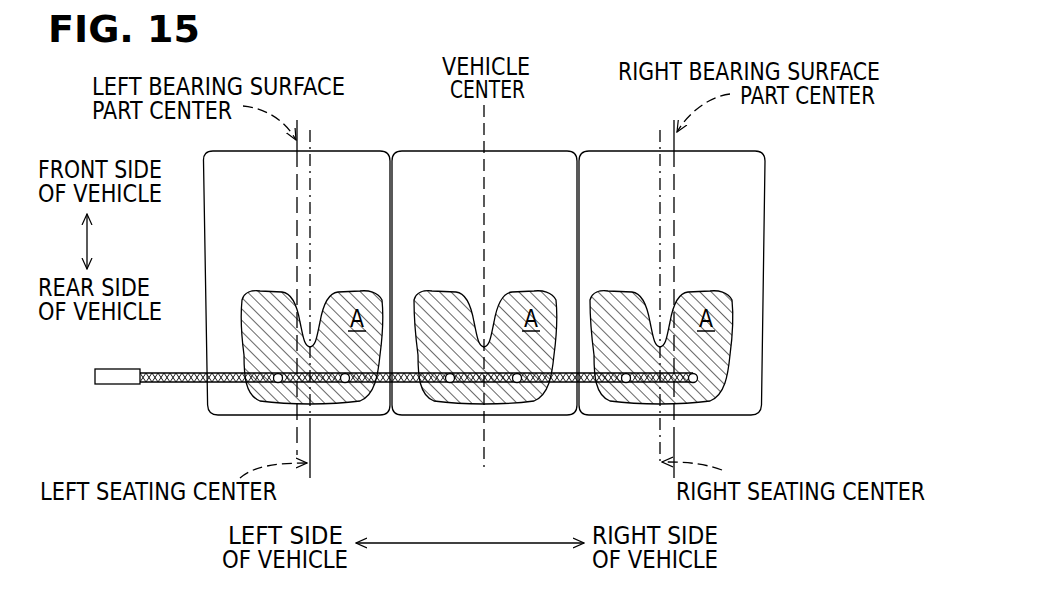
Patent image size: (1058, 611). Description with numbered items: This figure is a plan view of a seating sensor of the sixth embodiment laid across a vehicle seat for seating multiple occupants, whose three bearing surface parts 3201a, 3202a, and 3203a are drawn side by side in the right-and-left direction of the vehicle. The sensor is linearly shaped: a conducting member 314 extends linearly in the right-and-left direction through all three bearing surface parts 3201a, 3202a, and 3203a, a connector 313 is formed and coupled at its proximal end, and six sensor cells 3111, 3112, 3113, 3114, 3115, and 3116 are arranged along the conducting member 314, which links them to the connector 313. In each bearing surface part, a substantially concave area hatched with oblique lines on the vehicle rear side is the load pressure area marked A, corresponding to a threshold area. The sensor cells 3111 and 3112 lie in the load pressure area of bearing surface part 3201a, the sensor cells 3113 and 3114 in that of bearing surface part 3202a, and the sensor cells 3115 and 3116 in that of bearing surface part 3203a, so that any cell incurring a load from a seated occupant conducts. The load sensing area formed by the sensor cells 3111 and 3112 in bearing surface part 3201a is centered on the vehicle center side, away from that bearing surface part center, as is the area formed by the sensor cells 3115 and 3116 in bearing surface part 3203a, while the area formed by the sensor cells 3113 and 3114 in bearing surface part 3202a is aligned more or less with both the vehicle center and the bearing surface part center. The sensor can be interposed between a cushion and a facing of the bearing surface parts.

The connector 313 is at (113, 384).
The conducting member 314 is at (172, 384).
The sensor cell 3111 is at (278, 384).
The sensor cell 3112 is at (346, 384).
The sensor cell 3113 is at (450, 384).
The sensor cell 3114 is at (518, 384).
The sensor cell 3115 is at (626, 384).
The sensor cell 3116 is at (693, 384).
The bearing surface part 3201a is at (280, 200).
The bearing surface part 3202a is at (468, 200).
The bearing surface part 3203a is at (653, 200).